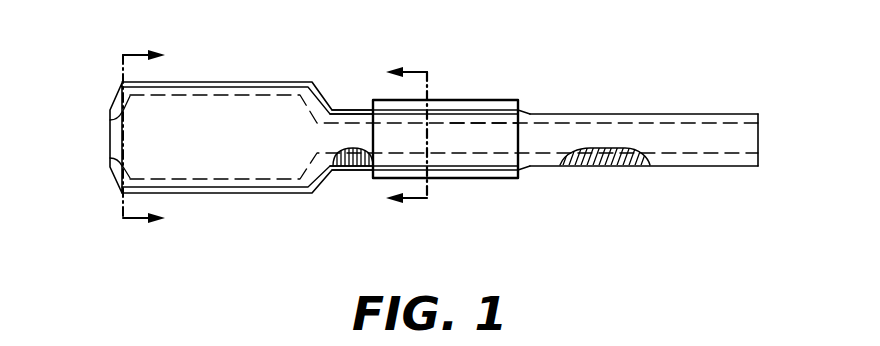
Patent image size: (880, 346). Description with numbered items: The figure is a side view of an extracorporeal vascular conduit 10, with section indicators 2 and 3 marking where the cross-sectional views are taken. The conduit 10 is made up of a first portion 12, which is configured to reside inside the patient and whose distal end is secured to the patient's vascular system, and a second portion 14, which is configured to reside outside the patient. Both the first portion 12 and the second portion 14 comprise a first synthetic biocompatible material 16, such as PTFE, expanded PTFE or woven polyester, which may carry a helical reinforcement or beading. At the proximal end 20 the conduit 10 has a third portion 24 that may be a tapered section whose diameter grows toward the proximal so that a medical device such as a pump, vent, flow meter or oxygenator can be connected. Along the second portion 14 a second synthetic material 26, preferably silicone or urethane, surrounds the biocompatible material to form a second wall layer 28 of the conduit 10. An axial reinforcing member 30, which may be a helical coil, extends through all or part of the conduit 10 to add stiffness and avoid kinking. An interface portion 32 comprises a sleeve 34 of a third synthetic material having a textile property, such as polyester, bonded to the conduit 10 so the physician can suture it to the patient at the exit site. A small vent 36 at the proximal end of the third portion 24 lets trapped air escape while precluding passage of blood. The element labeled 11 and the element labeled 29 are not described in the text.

The section line 2- 2 is at (406, 136).
The section line 3- 3 is at (144, 137).
The extracorporeal vascular conduit 10 is at (592, 70).
The distal end of tube 11 is at (758, 143).
The first portion 12 is at (677, 167).
The second portion 14 is at (333, 117).
The first synthetic biocompatible material 16 is at (642, 140).
The proximal end 20 is at (112, 108).
The third portion 24 is at (243, 195).
The second synthetic material 26 is at (370, 130).
The second wall layer 28 is at (468, 153).
The adhesive bond 29 is at (600, 168).
The axial reinforcing member 30 is at (363, 168).
The interface portion 32 is at (459, 72).
The sleeve 34 is at (487, 106).
The vent 36 is at (133, 193).